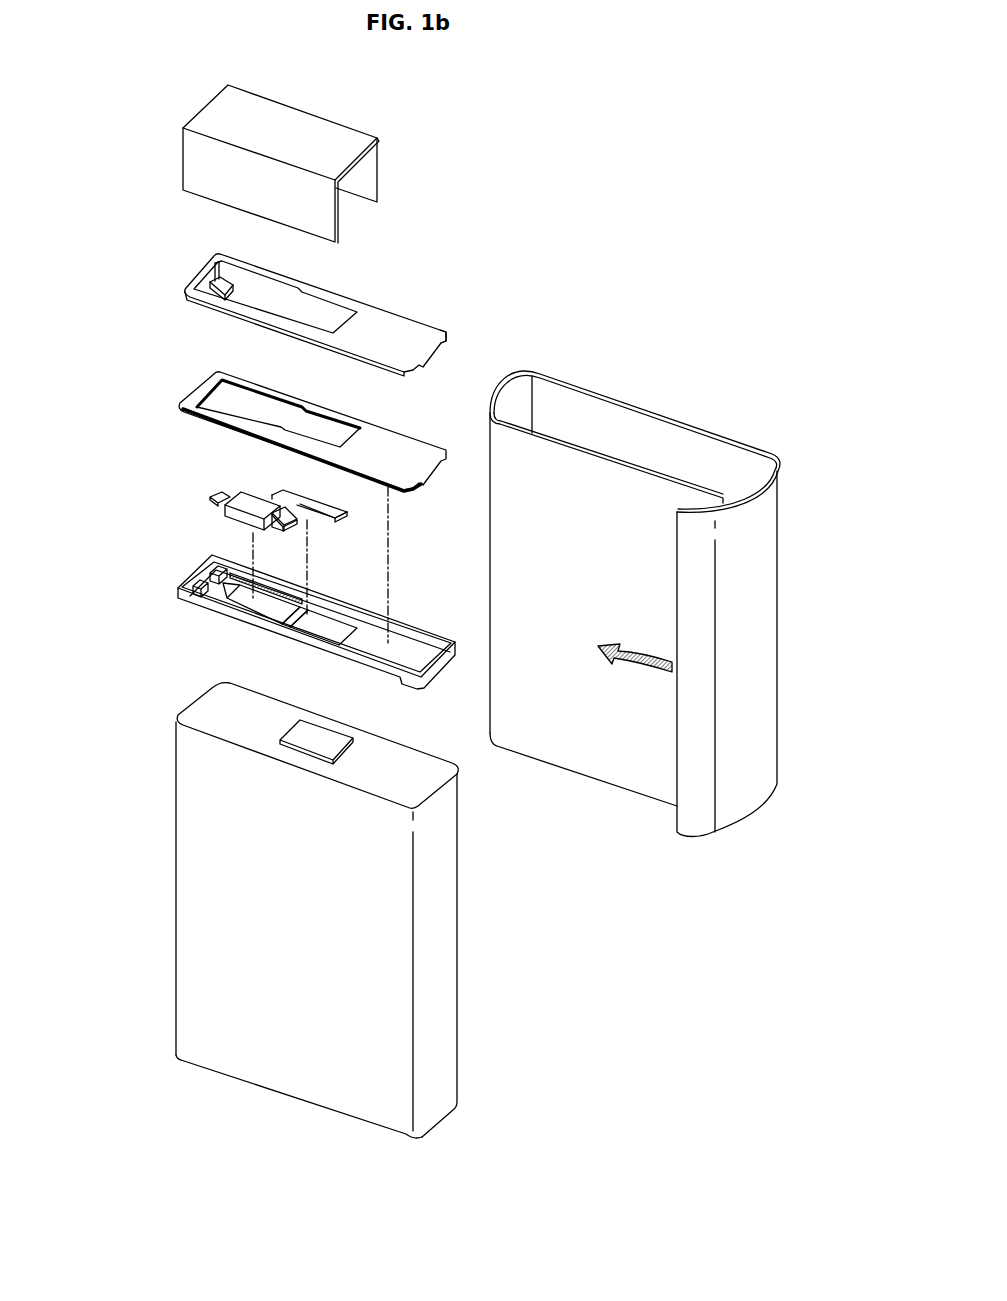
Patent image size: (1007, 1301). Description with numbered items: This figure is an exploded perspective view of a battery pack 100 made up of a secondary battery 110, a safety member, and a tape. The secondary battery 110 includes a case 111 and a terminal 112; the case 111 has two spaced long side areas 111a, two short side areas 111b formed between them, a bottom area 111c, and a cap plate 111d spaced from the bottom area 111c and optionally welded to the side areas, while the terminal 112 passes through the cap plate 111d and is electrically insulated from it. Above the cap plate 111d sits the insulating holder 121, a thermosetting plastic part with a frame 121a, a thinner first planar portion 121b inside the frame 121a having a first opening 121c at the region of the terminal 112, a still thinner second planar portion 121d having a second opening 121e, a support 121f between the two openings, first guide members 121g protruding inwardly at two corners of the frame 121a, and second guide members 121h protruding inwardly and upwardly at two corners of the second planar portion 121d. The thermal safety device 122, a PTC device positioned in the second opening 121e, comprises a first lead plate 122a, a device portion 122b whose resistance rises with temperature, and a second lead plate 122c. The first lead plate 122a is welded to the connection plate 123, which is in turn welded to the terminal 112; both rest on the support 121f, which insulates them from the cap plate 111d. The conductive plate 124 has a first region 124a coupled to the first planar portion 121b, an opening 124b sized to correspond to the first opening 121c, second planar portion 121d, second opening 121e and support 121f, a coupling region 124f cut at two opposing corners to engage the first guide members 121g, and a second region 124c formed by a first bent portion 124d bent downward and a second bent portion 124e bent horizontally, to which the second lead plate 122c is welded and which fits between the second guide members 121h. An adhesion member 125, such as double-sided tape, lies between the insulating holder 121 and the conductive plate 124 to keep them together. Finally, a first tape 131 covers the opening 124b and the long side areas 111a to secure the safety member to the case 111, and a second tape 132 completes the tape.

The battery pack 100 is at (708, 116).
The secondary battery 110 is at (324, 906).
The case 111 is at (324, 925).
The long side areas 111a is at (273, 1073).
The short side areas 111b is at (450, 1073).
The bottom area 111c is at (308, 1105).
The cap plate 111d is at (392, 748).
The terminal 112 is at (318, 735).
The insulating holder 121 is at (287, 605).
The frame 121a is at (345, 596).
The first planar portion 121b is at (402, 633).
The first opening 121c is at (307, 622).
The second planar portion 121d is at (215, 585).
The second opening 121e is at (245, 603).
The support 121f is at (275, 605).
The first guide member 121g is at (447, 639).
The second guide member 121h is at (218, 557).
The thermal safety device 122 is at (257, 496).
The first lead plate 122a is at (285, 518).
The device portion 122b is at (260, 497).
The second lead plate 122c is at (222, 493).
The connection plate 123 is at (328, 516).
The conductive plate 124 is at (273, 296).
The first region 124a is at (387, 325).
The opening 124b is at (283, 296).
The second region 124c is at (142, 258).
The first bent portion 124d is at (213, 268).
The second bent portion 124e is at (220, 287).
The coupling region 124f is at (477, 312).
The adhesion member 125 is at (188, 383).
The first tape 131 is at (296, 117).
The second tape 132 is at (658, 425).